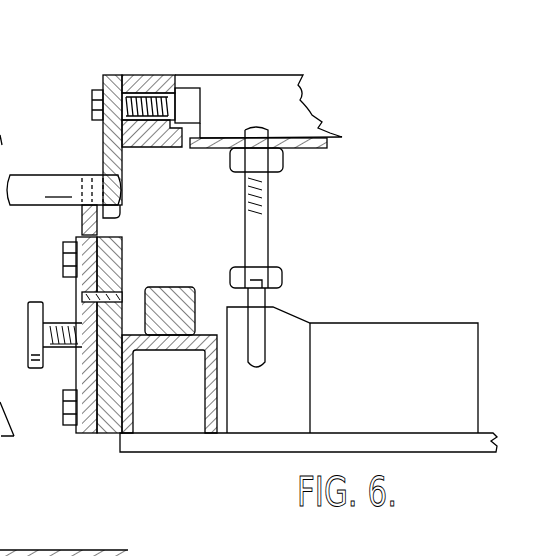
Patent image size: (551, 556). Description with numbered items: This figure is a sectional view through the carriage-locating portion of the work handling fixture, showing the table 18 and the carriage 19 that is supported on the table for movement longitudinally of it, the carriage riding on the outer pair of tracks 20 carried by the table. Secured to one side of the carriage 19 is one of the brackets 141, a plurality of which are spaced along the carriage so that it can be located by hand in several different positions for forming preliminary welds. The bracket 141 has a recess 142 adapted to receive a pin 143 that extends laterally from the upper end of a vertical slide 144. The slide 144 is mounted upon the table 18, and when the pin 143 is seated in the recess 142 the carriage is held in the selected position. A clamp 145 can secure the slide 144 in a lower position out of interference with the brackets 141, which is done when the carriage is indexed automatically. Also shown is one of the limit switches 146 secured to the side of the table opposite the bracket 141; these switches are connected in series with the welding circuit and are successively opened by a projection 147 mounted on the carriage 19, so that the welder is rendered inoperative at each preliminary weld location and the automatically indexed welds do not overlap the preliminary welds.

The table 18 is at (197, 418).
The carriage 19 is at (287, 99).
The outer pair of tracks 20 is at (186, 288).
The bracket 141 is at (110, 130).
The recess 142 is at (122, 213).
The pin 143 is at (52, 188).
The vertical slide 144 is at (82, 370).
The clamp 145 is at (42, 300).
The limit switch 146 is at (392, 335).
The projection 147 is at (260, 273).